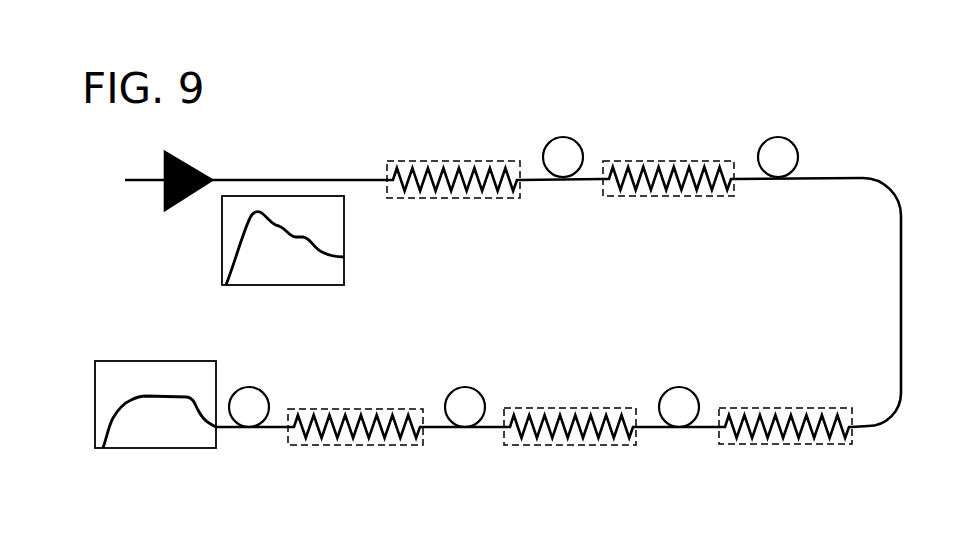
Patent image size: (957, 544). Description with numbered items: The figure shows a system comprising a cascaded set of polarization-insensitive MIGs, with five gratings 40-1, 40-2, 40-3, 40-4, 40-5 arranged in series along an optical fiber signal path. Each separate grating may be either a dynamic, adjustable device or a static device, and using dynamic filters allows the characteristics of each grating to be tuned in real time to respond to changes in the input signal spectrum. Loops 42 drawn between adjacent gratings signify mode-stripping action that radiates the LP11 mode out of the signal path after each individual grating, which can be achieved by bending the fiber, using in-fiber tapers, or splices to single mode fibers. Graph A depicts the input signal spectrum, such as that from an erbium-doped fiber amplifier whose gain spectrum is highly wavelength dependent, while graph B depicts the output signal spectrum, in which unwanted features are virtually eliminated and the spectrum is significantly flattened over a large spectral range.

The MIG 40-1 is at (428, 161).
The MIG 40-2 is at (643, 160).
The MIG 40-3 is at (760, 408).
The MIG 40-4 is at (545, 408).
The MIG 40-5 is at (332, 409).
The loops 42 is at (562, 137).
The graph A is at (222, 238).
The graph B is at (95, 405).